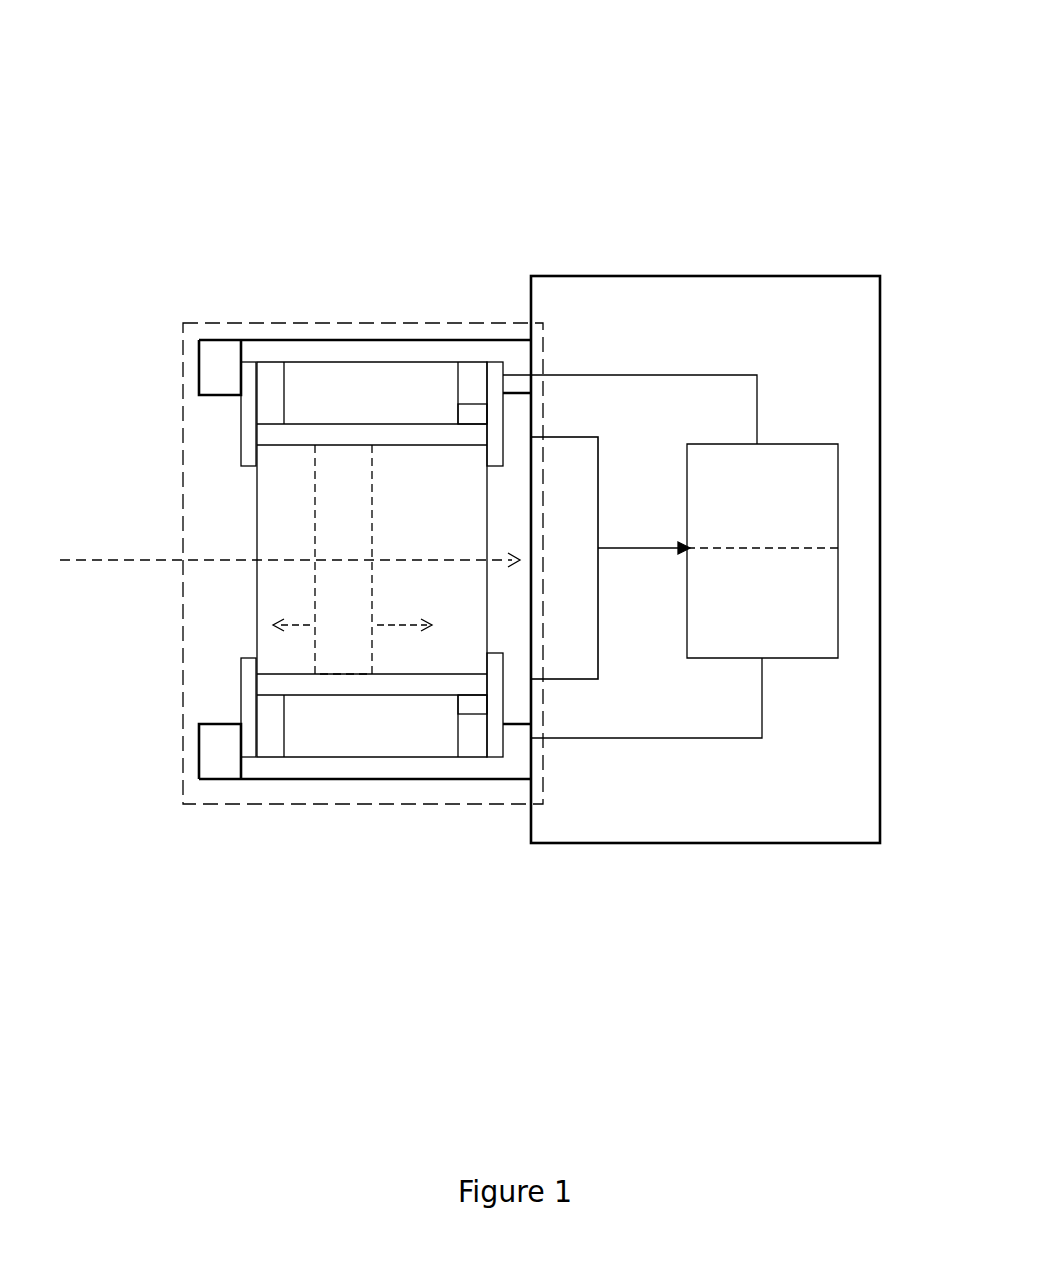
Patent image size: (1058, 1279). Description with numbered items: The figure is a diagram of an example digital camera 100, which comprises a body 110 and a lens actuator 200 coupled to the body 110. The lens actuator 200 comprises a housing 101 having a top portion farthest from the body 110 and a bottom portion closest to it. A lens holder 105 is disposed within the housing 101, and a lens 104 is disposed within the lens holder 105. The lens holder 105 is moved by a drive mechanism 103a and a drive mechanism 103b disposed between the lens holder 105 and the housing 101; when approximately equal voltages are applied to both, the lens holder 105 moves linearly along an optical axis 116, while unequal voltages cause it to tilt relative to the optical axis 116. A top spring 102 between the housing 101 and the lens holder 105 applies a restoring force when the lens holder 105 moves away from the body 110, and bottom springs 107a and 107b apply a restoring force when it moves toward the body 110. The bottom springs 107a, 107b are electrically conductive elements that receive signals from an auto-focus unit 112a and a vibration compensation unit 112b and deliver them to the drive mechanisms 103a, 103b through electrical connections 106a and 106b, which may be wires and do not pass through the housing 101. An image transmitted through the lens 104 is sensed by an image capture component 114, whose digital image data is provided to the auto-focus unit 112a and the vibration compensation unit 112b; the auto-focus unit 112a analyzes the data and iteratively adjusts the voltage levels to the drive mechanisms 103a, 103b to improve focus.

The digital camera 100 is at (946, 218).
The housing 101 is at (213, 346).
The top spring 102 is at (250, 373).
The drive mechanism 103a is at (330, 373).
The drive mechanism 103b is at (317, 742).
The lens 104 is at (343, 462).
The lens holder 105 is at (381, 432).
The electrical connection 106a is at (473, 403).
The electrical connection 106b is at (473, 715).
The bottom spring 107a is at (492, 373).
The bottom spring 107b is at (493, 750).
The body 110 is at (691, 559).
The auto-focus unit 112a is at (762, 496).
The vibration compensation unit 112b is at (762, 603).
The image capture component 114 is at (567, 657).
The optical axis 116 is at (284, 550).
The lens actuator 200 is at (362, 805).